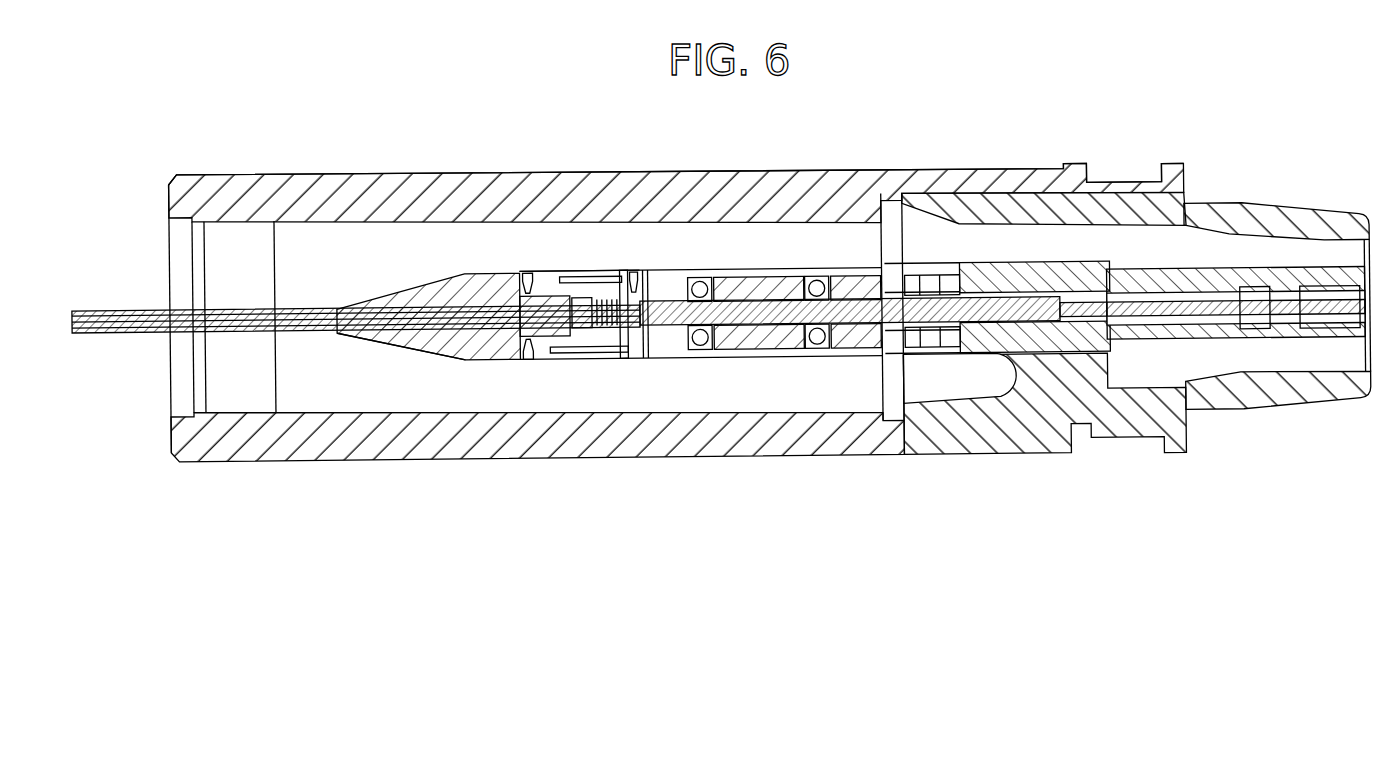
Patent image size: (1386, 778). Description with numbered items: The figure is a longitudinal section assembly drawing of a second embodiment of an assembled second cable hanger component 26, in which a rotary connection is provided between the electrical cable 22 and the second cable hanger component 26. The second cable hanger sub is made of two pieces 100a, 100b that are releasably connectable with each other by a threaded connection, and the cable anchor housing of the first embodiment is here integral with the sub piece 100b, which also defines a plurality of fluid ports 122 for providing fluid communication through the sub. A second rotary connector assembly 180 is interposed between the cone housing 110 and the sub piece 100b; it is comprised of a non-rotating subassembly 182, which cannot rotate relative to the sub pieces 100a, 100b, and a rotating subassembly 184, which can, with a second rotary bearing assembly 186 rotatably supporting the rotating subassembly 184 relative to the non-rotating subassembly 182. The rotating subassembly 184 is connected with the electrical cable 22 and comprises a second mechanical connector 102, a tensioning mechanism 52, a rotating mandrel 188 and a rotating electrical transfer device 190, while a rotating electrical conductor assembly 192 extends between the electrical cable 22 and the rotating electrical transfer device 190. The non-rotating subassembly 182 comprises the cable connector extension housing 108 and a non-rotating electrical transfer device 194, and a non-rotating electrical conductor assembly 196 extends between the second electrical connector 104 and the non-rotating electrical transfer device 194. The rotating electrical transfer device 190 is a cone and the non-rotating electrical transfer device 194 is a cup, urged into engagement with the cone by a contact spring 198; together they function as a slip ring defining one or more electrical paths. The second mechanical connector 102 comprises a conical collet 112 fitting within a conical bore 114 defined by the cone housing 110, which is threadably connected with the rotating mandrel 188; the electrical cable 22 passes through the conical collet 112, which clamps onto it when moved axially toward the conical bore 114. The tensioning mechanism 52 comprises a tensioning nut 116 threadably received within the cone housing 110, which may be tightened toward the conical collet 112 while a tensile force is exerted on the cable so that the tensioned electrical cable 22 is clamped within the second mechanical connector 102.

The second cable hanger component 26 is at (343, 136).
The electrical cable 22 is at (113, 310).
The tensioning mechanism 52 is at (422, 272).
The second cable hanger sub piece 100a is at (452, 183).
The second cable hanger sub piece 100b is at (1298, 230).
The second mechanical connector 102 is at (507, 336).
The second electrical connector 104 is at (1320, 349).
The cable connector extension housing 108 is at (775, 272).
The cone housing 110 is at (550, 278).
The conical collet 112 is at (488, 334).
The conical bore 114 is at (498, 294).
The tensioning nut 116 is at (568, 298).
The fluid ports 122 is at (996, 386).
The second rotary connector assembly 180 is at (658, 246).
The non-rotating subassembly 182 is at (823, 266).
The rotating subassembly 184 is at (567, 355).
The second rotary bearing assembly 186 is at (703, 356).
The rotating mandrel 188 is at (592, 275).
The rotating electrical transfer device 190 is at (856, 266).
The rotating electrical conductor assembly 192 is at (740, 303).
The non-rotating electrical transfer device 194 is at (870, 285).
The non-rotating electrical conductor assembly 196 is at (1060, 318).
The contact spring 198 is at (888, 290).